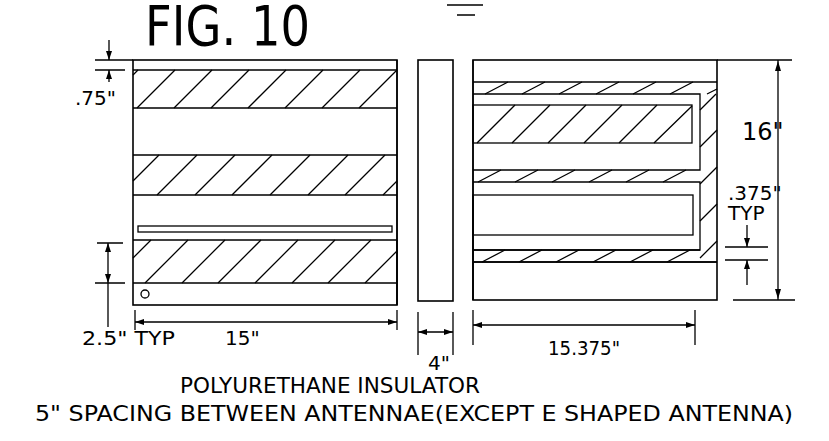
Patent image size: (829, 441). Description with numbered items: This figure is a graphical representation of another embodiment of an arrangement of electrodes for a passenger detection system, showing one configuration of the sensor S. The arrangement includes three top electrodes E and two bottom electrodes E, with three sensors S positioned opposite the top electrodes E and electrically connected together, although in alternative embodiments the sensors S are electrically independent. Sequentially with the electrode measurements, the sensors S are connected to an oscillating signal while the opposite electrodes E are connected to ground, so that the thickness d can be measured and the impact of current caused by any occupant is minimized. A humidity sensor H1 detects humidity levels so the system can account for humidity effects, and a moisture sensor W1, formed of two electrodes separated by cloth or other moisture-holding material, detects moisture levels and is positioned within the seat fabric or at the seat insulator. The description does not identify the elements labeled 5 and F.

The E-shaped antenna panel 5 is at (633, 78).
The foam insulator face F is at (397, 83).
The moisture sensor W1 is at (139, 227).
The humidity sensor H1 is at (141, 295).
The electrode E is at (397, 277).
The sensor S is at (571, 262).